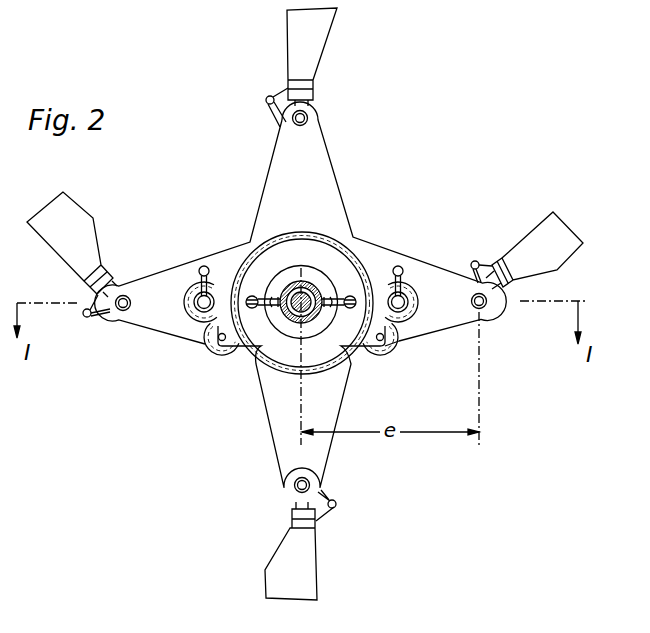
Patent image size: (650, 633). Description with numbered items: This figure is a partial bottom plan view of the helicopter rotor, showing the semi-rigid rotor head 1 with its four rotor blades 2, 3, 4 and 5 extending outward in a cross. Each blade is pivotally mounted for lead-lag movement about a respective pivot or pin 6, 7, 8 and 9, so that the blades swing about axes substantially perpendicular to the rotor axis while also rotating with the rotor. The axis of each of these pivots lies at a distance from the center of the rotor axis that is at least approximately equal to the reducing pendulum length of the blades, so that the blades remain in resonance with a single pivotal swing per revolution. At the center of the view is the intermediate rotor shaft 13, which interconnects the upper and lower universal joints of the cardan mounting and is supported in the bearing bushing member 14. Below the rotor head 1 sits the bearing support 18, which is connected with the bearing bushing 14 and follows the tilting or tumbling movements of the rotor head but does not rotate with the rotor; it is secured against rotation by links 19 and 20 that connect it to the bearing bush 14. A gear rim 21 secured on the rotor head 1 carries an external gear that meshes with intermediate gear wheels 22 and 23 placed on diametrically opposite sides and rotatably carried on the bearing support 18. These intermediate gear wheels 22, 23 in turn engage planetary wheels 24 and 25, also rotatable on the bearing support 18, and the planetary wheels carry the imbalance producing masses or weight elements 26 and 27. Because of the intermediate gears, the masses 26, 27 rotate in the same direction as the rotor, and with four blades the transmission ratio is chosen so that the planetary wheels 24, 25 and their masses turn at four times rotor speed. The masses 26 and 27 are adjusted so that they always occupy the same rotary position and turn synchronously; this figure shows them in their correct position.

The semi-rigid rotor head 1 is at (312, 171).
The rotor blade 2 is at (323, 30).
The rotor blade 3 is at (563, 245).
The rotor blade 4 is at (300, 577).
The rotor blade 5 is at (77, 218).
The pivot or pin 6 is at (309, 117).
The pivot or pin 7 is at (489, 306).
The pivot or pin 8 is at (311, 487).
The pivot or pin 9 is at (122, 312).
The intermediate rotor shaft 13 is at (297, 284).
The bearing bushing member 14 is at (320, 296).
The bearing support 18 is at (318, 258).
The link 19 is at (262, 312).
The link 20 is at (396, 338).
The gear rim 21 is at (281, 235).
The intermediate gear wheel 22 is at (222, 356).
The intermediate gear wheel 23 is at (373, 357).
The planetary wheel 24 is at (184, 298).
The planetary wheel 25 is at (414, 292).
The imbalance producing mass 26 is at (204, 266).
The imbalance producing mass 27 is at (403, 269).